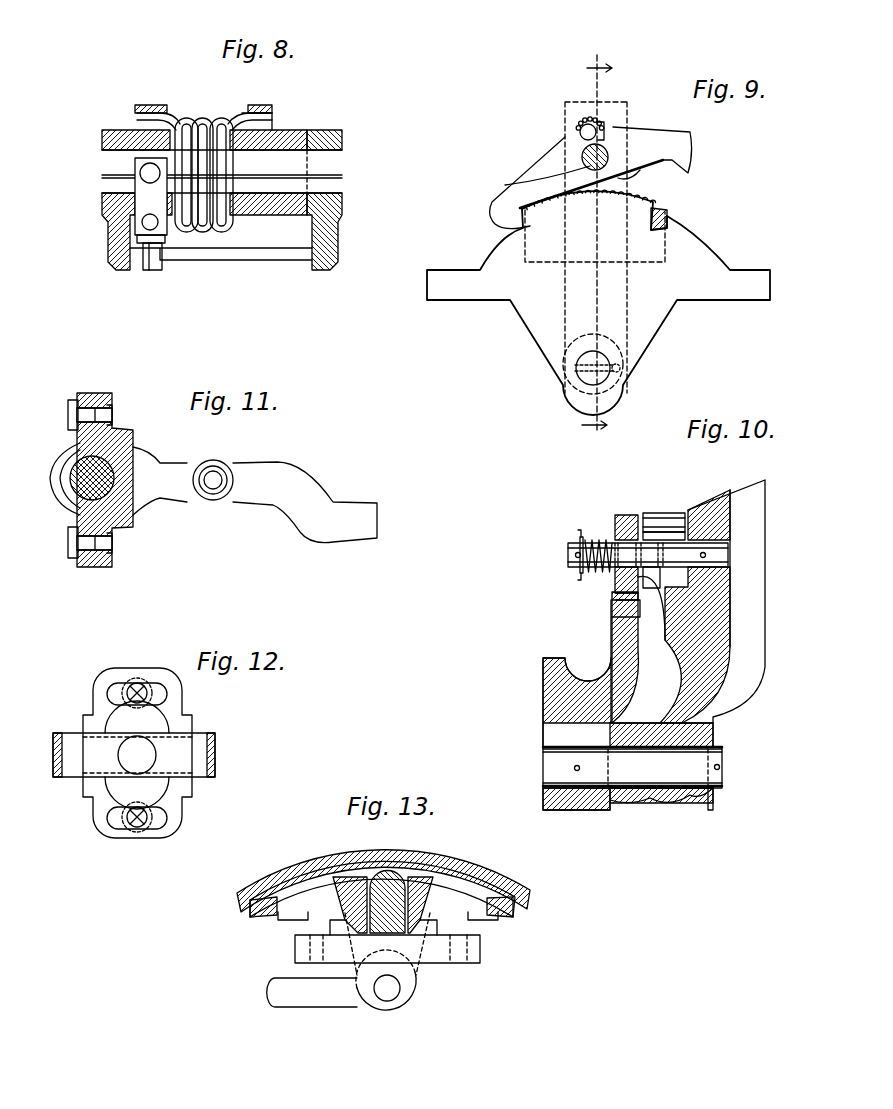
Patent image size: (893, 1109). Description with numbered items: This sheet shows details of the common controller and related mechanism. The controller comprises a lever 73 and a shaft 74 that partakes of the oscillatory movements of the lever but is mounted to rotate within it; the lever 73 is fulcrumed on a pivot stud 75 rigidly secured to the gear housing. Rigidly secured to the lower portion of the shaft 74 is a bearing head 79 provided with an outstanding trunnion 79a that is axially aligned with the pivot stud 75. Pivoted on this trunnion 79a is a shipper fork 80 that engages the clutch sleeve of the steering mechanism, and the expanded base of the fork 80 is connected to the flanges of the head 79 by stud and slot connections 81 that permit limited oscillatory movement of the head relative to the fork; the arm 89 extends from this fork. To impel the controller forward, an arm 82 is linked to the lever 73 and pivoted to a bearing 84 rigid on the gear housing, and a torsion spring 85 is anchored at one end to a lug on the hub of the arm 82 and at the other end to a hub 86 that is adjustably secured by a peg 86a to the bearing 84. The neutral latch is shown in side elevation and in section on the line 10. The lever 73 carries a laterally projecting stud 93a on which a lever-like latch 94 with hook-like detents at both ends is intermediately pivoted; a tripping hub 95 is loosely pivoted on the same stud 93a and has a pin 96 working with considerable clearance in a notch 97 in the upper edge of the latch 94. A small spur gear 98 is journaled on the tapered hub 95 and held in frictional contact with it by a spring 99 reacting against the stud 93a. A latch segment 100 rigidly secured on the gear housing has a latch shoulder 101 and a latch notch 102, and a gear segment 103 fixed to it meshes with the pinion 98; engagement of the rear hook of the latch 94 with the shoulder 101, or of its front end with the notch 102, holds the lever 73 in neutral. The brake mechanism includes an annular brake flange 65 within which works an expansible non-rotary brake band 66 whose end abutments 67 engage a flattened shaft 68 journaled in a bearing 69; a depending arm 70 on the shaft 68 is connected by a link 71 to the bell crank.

In FIG. 9, the section line 10— 10 is at (597, 243).
In FIG. 13, the annular brake flange 65 is at (487, 883).
In FIG. 13, the expansible non-rotary brake band 66 is at (510, 913).
In FIG. 13, the abutments 67 is at (337, 912).
In FIG. 13, the flattened shaft 68 is at (377, 930).
In FIG. 13, the bearing 69 is at (467, 952).
In FIG. 13, the depending arm 70 is at (390, 1008).
In FIG. 13, the link 71 is at (292, 993).
In FIG. 9, the lever 73 is at (632, 102).
In FIG. 10, the lever 73 is at (745, 525).
In FIG. 11, the shaft 74 is at (75, 500).
In FIG. 12, the shaft 74 is at (198, 767).
In FIG. 9, the pivot stud 75 is at (580, 363).
In FIG. 10, the pivot stud 75 is at (648, 765).
In FIG. 11, the bearing head 79 is at (68, 453).
In FIG. 11, the trunnion 79a is at (130, 490).
In FIG. 12, the trunnion 79a is at (140, 755).
In FIG. 11, the shipper fork 80 is at (153, 490).
In FIG. 12, the shipper fork 80 is at (98, 710).
In FIG. 11, the stud and slot connections 81 is at (115, 415).
In FIG. 12, the stud and slot connections 81 is at (140, 688).
In FIG. 8, the arm 82 is at (262, 106).
In FIG. 8, the bearing 84 is at (115, 232).
In FIG. 8, the torsion spring 85 is at (228, 225).
In FIG. 8, the hub 86 is at (151, 104).
In FIG. 8, the peg 86a is at (152, 272).
In FIG. 11, the lever arm 89 is at (320, 515).
In FIG. 9, the laterally projecting stud 93a is at (508, 184).
In FIG. 10, the laterally projecting stud 93a is at (718, 552).
In FIG. 9, the lever-like latch 94 is at (552, 178).
In FIG. 10, the lever-like latch 94 is at (678, 578).
In FIG. 10, the tripping hub 95 is at (615, 632).
In FIG. 9, the laterally projecting pin 96 is at (580, 128).
In FIG. 10, the laterally projecting pin 96 is at (660, 514).
In FIG. 9, the notch 97 is at (614, 138).
In FIG. 9, the small spur gear 98 is at (628, 174).
In FIG. 10, the small spur gear 98 is at (617, 516).
In FIG. 10, the spring 99 is at (580, 578).
In FIG. 9, the latch segment 100 is at (687, 260).
In FIG. 10, the latch segment 100 is at (560, 711).
In FIG. 9, the latch shoulder 101 is at (539, 226).
In FIG. 9, the latch notch 102 is at (663, 220).
In FIG. 9, the gear segment 103 is at (657, 213).
In FIG. 10, the gear segment 103 is at (617, 604).